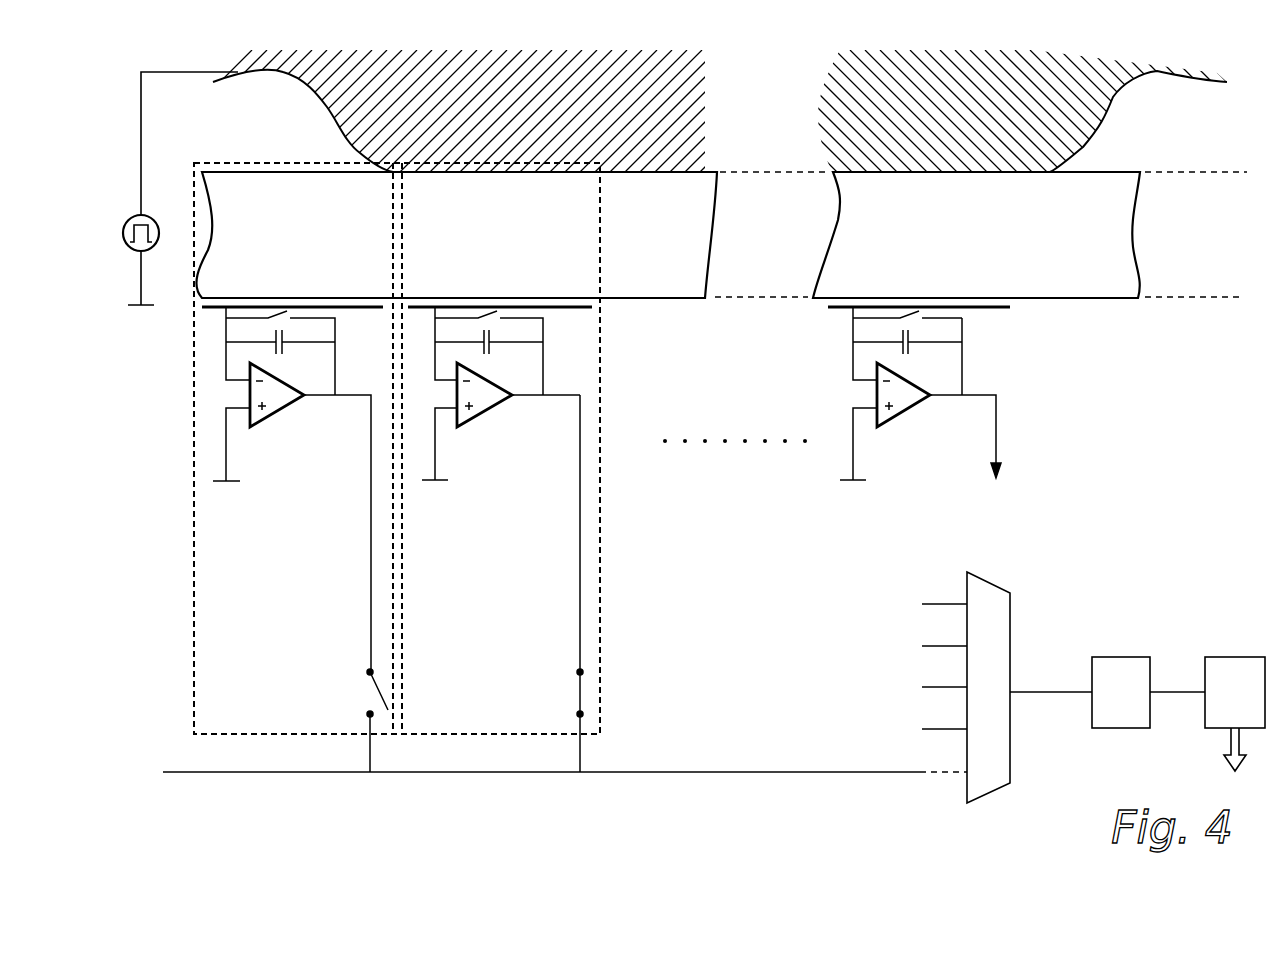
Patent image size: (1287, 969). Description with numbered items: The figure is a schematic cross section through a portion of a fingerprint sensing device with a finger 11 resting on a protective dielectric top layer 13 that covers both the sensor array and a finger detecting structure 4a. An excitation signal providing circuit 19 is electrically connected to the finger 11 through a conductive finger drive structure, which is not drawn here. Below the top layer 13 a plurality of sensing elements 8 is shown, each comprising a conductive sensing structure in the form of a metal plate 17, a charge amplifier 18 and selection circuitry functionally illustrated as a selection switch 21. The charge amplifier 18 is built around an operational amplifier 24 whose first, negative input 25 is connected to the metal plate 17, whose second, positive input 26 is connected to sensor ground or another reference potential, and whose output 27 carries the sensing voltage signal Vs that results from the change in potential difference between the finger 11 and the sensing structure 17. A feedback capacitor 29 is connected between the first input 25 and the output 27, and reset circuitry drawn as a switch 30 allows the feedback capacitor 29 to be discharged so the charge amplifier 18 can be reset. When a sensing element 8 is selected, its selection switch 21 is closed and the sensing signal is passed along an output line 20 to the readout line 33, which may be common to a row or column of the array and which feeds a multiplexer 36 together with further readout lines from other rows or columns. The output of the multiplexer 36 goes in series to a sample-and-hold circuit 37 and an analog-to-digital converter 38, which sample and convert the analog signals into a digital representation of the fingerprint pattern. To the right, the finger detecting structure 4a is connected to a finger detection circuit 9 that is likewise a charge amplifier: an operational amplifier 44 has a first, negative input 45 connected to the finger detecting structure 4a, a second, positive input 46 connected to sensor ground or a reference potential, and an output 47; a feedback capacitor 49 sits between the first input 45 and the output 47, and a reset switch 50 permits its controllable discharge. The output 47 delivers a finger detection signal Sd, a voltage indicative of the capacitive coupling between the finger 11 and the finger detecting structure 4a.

The finger 11 is at (571, 106).
The protective dielectric top layer 13 is at (492, 228).
The excitation signal providing circuit 19 is at (132, 248).
The first input 25 is at (457, 380).
The switch 30 is at (492, 314).
The feedback capacitor 29 is at (505, 325).
The operational amplifier 24 is at (483, 373).
The metal plate 17 is at (570, 308).
The second input 26 is at (458, 413).
The output 27 is at (514, 398).
The charge amplifier 18 is at (481, 435).
The output line 20 is at (543, 418).
The selection switch 21 is at (562, 685).
The sensing element 8 is at (433, 755).
The readout line 33 is at (462, 773).
The switch 50 is at (912, 314).
The feedback capacitor 49 is at (924, 322).
The finger detecting structure 4a is at (982, 306).
The operational amplifier 44 is at (908, 381).
The first input 45 is at (877, 380).
The second input 46 is at (877, 418).
The output 47 is at (981, 436).
The finger detection circuit 9 is at (1010, 373).
The multiplexer 36 is at (990, 580).
The sample-and-hold circuit 37 is at (1118, 655).
The analog-to-digital converter 38 is at (1238, 655).